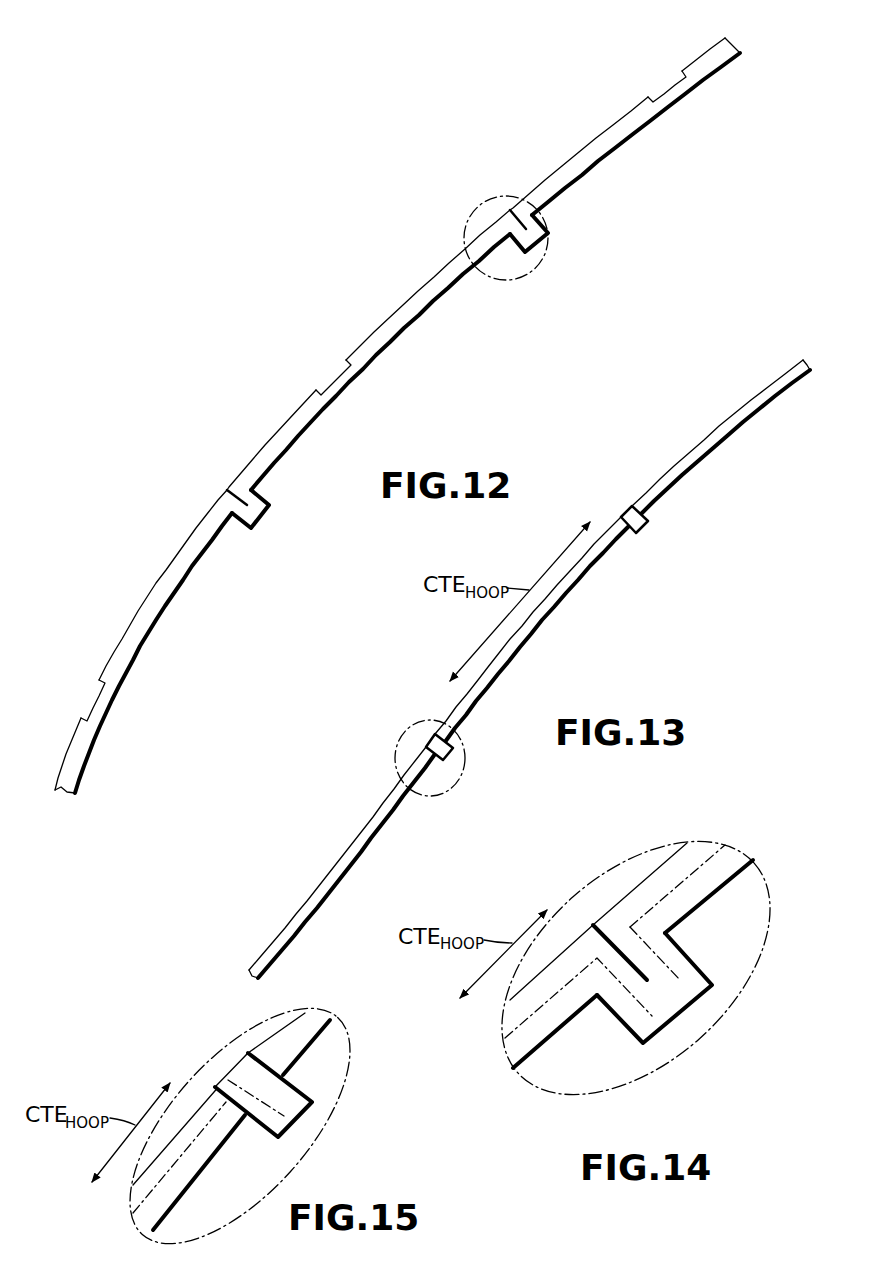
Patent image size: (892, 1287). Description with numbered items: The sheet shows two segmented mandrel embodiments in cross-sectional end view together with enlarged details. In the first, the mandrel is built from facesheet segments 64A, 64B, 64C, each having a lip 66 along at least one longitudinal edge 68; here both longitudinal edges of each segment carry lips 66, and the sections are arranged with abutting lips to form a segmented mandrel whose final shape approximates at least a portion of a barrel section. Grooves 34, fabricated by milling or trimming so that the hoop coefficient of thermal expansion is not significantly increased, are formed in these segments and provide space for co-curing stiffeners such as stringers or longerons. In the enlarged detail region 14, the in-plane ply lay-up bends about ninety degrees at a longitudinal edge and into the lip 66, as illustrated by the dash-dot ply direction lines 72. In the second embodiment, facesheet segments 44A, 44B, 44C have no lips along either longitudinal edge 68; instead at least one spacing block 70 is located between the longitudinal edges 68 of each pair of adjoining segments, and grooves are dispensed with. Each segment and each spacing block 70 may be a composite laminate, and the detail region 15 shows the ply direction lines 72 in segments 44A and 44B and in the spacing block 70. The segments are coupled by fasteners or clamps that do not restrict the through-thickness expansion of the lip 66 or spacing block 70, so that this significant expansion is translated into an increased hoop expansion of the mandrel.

In FIG. 12, the detail region of FIG. 14 is at (478, 208).
In FIG. 13, the detail region of FIG. 15 is at (404, 745).
In FIG. 12, the grooves 34 is at (655, 95).
In FIG. 13, the facesheet segment 44A is at (291, 903).
In FIG. 15, the facesheet segment 44A is at (192, 1188).
In FIG. 13, the facesheet segment 44B is at (556, 592).
In FIG. 15, the facesheet segment 44B is at (300, 1055).
In FIG. 13, the facesheet segment 44C is at (738, 412).
In FIG. 12, the facesheet segment 64A is at (148, 593).
In FIG. 12, the facesheet segment 64B is at (292, 418).
In FIG. 14, the facesheet segment 64B is at (538, 980).
In FIG. 12, the facesheet segment 64C is at (615, 121).
In FIG. 14, the facesheet segment 64C is at (653, 867).
In FIG. 12, the lip 66 is at (270, 507).
In FIG. 14, the lip 66 is at (698, 1003).
In FIG. 12, the longitudinal edge 68 is at (227, 492).
In FIG. 13, the longitudinal edge 68 is at (632, 505).
In FIG. 14, the longitudinal edge 68 is at (570, 938).
In FIG. 15, the longitudinal edge 68 is at (253, 1118).
In FIG. 13, the spacing block 70 is at (650, 528).
In FIG. 15, the spacing block 70 is at (302, 1110).
In FIG. 14, the ply direction lines 72 is at (690, 877).
In FIG. 15, the ply direction lines 72 is at (280, 1044).